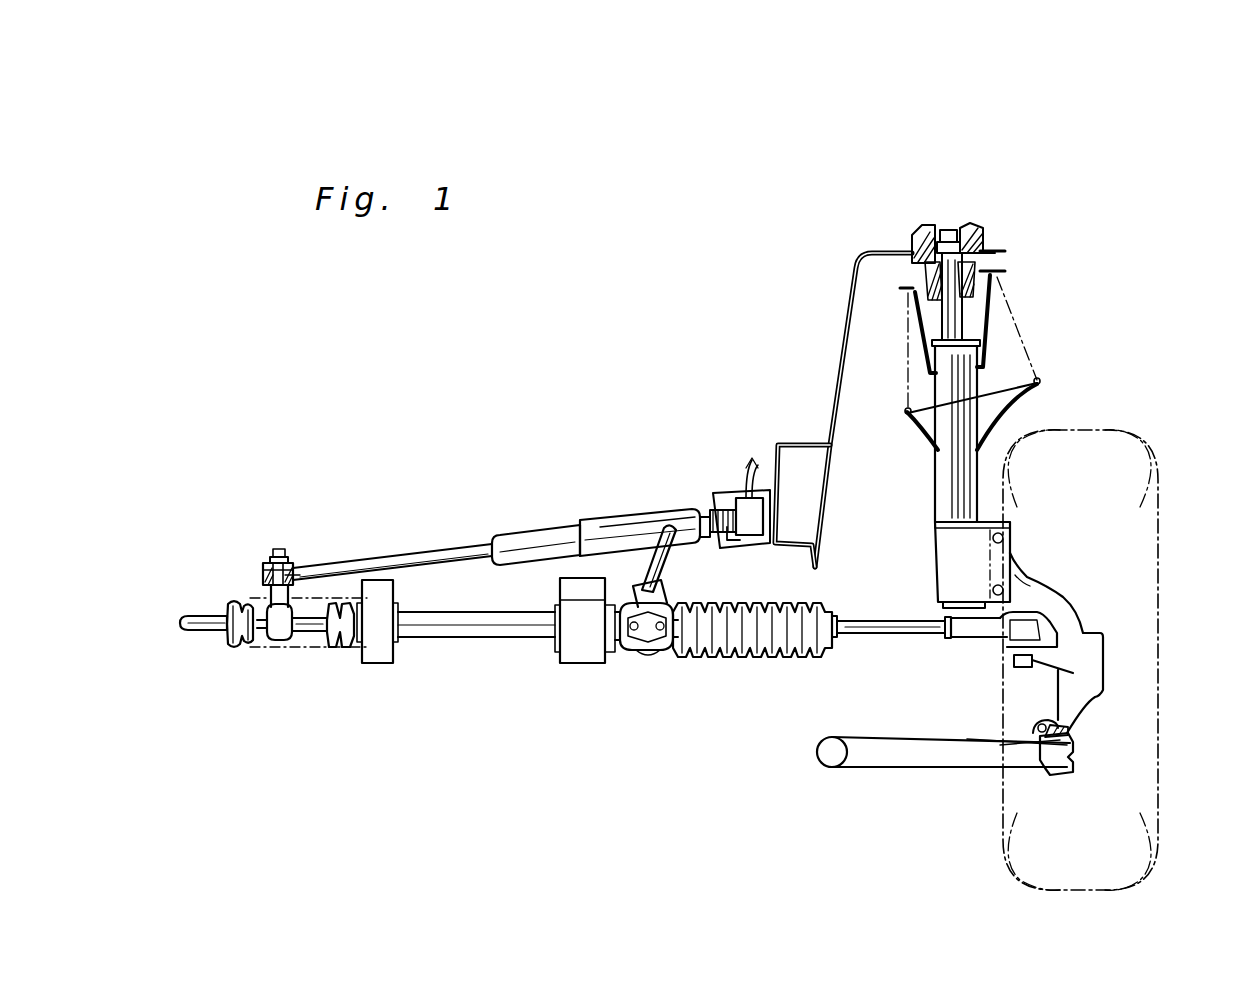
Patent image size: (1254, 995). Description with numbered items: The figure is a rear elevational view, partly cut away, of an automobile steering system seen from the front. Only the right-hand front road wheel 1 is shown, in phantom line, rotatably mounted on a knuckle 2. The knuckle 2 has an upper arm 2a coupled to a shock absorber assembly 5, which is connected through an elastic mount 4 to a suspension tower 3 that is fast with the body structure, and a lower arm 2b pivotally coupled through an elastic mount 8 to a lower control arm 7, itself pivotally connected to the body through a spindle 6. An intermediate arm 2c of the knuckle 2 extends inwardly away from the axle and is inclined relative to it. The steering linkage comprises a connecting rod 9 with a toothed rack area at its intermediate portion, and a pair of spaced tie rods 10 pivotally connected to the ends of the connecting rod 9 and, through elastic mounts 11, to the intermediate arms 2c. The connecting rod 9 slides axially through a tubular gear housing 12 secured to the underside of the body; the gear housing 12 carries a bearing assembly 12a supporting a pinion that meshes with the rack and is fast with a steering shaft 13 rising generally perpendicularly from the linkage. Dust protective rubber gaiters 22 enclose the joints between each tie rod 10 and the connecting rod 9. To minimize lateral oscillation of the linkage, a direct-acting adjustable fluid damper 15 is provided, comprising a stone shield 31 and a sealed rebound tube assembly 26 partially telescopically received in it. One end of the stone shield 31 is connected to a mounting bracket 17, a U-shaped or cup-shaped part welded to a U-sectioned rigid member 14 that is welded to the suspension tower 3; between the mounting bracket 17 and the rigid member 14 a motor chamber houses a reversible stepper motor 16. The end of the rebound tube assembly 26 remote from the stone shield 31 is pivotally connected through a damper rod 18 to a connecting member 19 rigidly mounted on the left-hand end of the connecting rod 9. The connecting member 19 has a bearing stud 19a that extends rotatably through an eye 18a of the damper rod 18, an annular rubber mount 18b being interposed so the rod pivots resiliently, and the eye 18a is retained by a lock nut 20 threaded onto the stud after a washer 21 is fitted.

The right-hand front road wheel 1 is at (1137, 433).
The knuckle 2 is at (1090, 607).
The upper arm 2a is at (1022, 582).
The lower arm 2b is at (1066, 717).
The intermediate arm 2c is at (1012, 650).
The suspension tower 3 is at (880, 248).
The elastic mount 4 is at (985, 230).
The shock absorber assembly 5 is at (980, 382).
The spindle 6 is at (825, 748).
The lower control arm 7 is at (913, 770).
The elastic mount 8 is at (1076, 762).
The connecting rod 9 is at (312, 642).
The tie rod 10 is at (198, 640).
The elastic mount 11 is at (985, 640).
The gear housing 12 is at (487, 640).
The bearing assembly 12a is at (660, 655).
The steering shaft 13 is at (690, 563).
The U-sectioned rigid member 14 is at (792, 443).
The damper 15 is at (558, 518).
The reversible stepper motor 16 is at (727, 495).
The mounting bracket 17 is at (713, 500).
The damper rod 18 is at (432, 552).
The eye 18a is at (247, 560).
The connecting rod end portion 18b is at (298, 560).
The connecting member 19 is at (278, 642).
The bearing stud 19a is at (301, 557).
The lock nut 20 is at (272, 556).
The washer 21 is at (293, 558).
The dust protective rubber gaiter 22 is at (754, 660).
The sealed rebound tube assembly 26 is at (527, 532).
The stone shield 31 is at (618, 522).